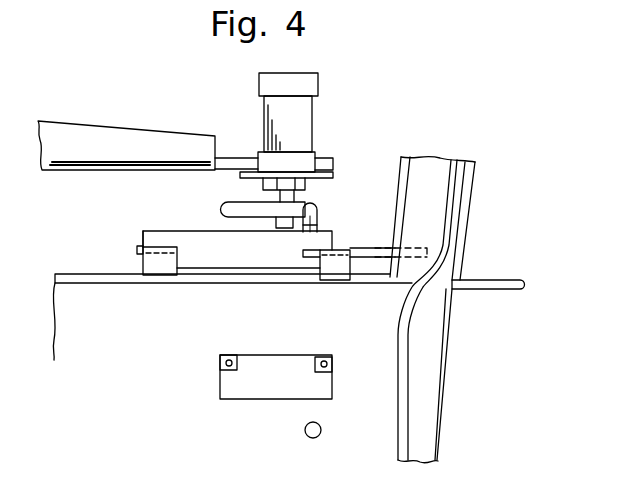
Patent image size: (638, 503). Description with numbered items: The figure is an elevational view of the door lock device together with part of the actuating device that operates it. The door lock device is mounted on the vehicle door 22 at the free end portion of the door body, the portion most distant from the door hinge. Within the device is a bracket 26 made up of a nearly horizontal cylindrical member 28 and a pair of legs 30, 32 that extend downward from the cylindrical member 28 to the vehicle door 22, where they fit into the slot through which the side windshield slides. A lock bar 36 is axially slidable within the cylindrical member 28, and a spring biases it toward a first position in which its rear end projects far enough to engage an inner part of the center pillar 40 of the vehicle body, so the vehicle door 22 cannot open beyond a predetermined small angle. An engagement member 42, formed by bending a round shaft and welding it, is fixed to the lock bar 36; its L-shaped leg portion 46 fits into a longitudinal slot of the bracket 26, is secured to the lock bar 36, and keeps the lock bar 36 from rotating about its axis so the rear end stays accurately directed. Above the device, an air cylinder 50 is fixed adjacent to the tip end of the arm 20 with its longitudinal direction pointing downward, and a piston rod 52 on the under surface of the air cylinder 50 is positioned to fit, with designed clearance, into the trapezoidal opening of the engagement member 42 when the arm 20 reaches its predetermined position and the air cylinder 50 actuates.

The arm 20 is at (148, 143).
The vehicle door 22 is at (95, 300).
The bracket 26 is at (135, 230).
The cylindrical member 28 is at (183, 240).
The leg 30 is at (335, 268).
The leg 32 is at (151, 268).
The lock bar 36 is at (372, 250).
The center pillar 40 is at (466, 162).
The engagement member 42 is at (243, 208).
The L-shaped leg portion 46 is at (310, 232).
The air cylinder 50 is at (305, 117).
The piston rod 52 is at (308, 203).